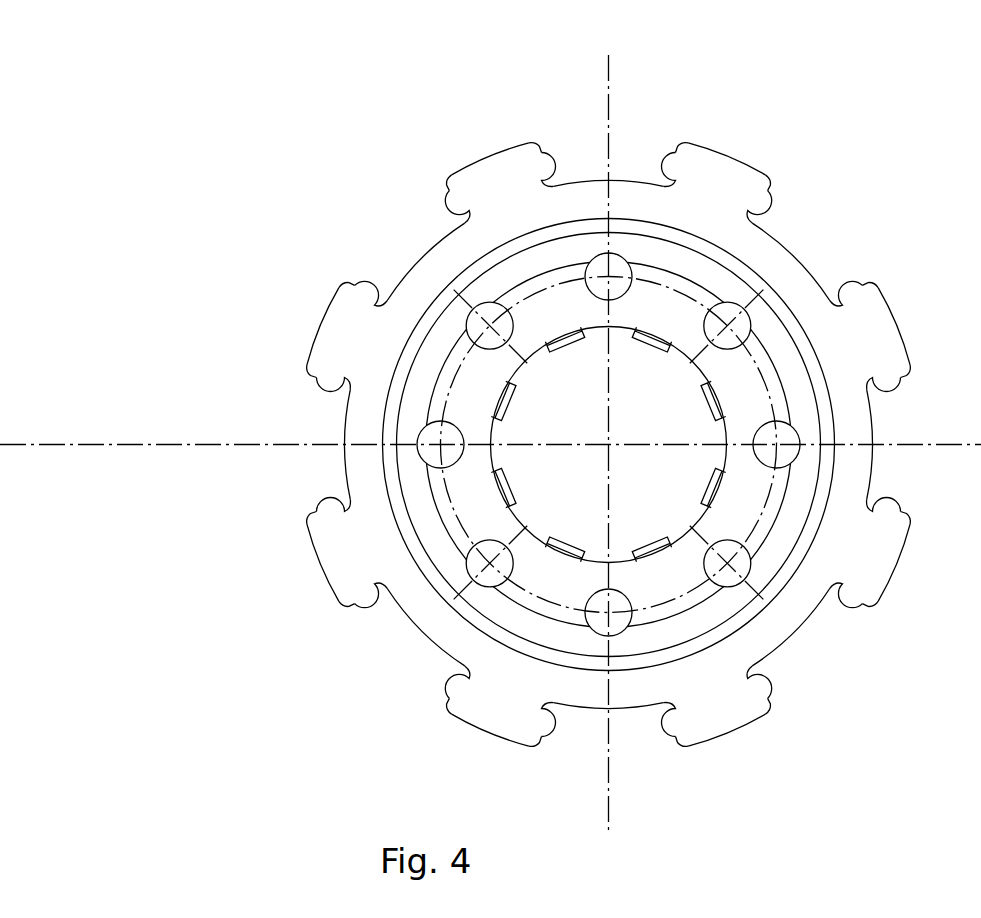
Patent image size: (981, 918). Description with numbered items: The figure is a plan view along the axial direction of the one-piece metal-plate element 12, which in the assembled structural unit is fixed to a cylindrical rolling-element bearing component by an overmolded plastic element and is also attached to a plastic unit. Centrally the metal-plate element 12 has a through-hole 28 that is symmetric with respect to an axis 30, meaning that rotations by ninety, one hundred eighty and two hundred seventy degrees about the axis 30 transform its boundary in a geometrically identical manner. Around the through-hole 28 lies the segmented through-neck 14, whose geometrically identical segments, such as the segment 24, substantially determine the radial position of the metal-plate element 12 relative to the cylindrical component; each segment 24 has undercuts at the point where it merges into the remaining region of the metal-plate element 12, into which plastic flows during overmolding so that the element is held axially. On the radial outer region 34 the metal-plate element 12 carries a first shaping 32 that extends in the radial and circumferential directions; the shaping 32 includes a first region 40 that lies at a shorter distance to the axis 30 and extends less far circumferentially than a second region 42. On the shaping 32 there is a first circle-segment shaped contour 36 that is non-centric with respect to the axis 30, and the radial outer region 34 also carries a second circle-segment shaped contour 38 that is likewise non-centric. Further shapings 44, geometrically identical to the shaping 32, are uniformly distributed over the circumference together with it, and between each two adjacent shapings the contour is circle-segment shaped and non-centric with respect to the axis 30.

The metal-plate element 12 is at (440, 253).
The through-neck 14 is at (560, 355).
The segment 24 is at (703, 407).
The through-hole 28 is at (680, 507).
The axis 30 is at (608, 445).
The first shaping 32 is at (750, 180).
The radial outer region 34 is at (640, 183).
The first circle-segment shaped contour 36 is at (745, 168).
The second circle-segment shaped contour 38 is at (810, 277).
The first region 40 is at (700, 195).
The second region 42 is at (708, 165).
The further shapings 44 is at (494, 171).